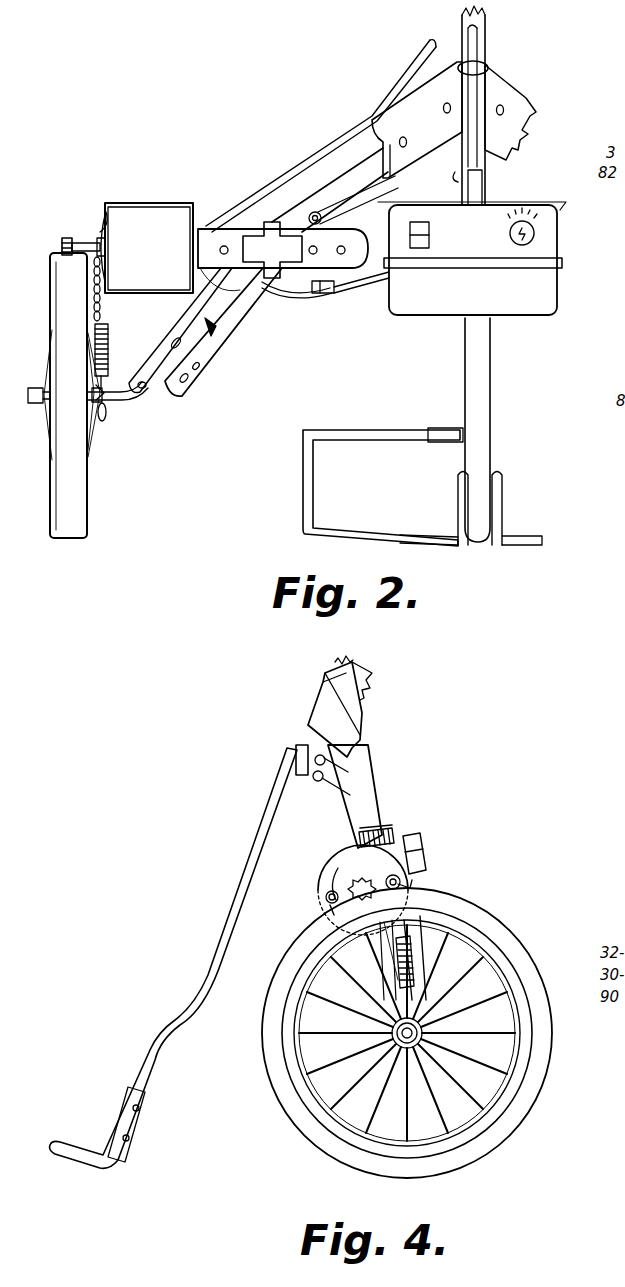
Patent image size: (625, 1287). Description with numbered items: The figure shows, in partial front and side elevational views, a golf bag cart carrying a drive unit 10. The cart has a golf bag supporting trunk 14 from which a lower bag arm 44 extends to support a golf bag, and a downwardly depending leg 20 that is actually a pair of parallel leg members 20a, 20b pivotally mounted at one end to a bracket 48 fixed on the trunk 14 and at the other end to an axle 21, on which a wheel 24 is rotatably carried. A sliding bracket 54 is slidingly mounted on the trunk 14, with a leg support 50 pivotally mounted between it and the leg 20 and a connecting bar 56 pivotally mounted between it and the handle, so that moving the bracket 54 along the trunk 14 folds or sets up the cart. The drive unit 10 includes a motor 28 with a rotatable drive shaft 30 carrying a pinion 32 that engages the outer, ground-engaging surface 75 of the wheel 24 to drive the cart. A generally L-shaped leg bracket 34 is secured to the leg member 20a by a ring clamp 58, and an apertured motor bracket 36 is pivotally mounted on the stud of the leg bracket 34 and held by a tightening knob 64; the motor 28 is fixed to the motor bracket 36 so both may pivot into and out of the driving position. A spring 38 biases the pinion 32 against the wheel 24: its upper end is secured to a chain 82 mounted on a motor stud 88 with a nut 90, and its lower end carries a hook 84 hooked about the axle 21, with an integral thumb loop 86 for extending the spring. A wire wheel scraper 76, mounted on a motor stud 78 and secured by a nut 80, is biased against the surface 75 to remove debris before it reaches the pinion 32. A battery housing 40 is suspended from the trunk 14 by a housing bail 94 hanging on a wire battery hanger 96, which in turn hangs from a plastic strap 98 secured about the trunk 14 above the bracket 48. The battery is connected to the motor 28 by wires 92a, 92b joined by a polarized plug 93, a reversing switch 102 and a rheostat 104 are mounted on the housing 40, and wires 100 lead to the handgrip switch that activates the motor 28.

In FIG. 2, the drive unit 10 is at (170, 185).
In FIG. 4, the drive unit 10 is at (300, 840).
In FIG. 2, the golf bag supporting trunk 14 is at (478, 8).
In FIG. 4, the golf bag supporting trunk 14 is at (350, 662).
In FIG. 2, the leg 20 is at (228, 352).
In FIG. 4, the leg 20 is at (380, 767).
In FIG. 2, the leg member 20a is at (166, 352).
In FIG. 4, the leg member 20a is at (396, 925).
In FIG. 2, the leg member 20b is at (236, 312).
In FIG. 4, the leg member 20b is at (426, 965).
In FIG. 2, the axle 21 is at (148, 394).
In FIG. 2, the wheel 24 is at (92, 488).
In FIG. 4, the wheel 24 is at (468, 1172).
In FIG. 2, the motor 28 is at (147, 248).
In FIG. 4, the motor 28 is at (318, 886).
In FIG. 2, the drive shaft 30 is at (80, 240).
In FIG. 2, the pinion 32 is at (65, 235).
In FIG. 4, the pinion 32 is at (360, 877).
In FIG. 2, the leg bracket 34 is at (310, 212).
In FIG. 4, the leg bracket 34 is at (382, 824).
In FIG. 2, the motor bracket 36 is at (205, 235).
In FIG. 2, the spring 38 is at (110, 345).
In FIG. 4, the spring 38 is at (412, 945).
In FIG. 2, the battery housing 40 is at (522, 310).
In FIG. 2, the lower bag arm 44 is at (314, 488).
In FIG. 4, the lower bag arm 44 is at (72, 1152).
In FIG. 2, the bracket 48 is at (412, 92).
In FIG. 4, the bracket 48 is at (322, 705).
In FIG. 2, the leg support 50 is at (376, 210).
In FIG. 4, the sliding bracket 54 is at (300, 768).
In FIG. 2, the connecting bar 56 is at (480, 50).
In FIG. 4, the ring clamp 58 is at (392, 836).
In FIG. 2, the tightening knob 64 is at (272, 221).
In FIG. 4, the tightening knob 64 is at (422, 850).
In FIG. 2, the outer surface 75 is at (70, 518).
In FIG. 4, the outer surface 75 is at (526, 1128).
In FIG. 4, the wheel scraper 76 is at (325, 906).
In FIG. 4, the motor stud 78 is at (326, 898).
In FIG. 4, the nut 80 is at (334, 872).
In FIG. 2, the chain 82 is at (104, 302).
In FIG. 4, the chain 82 is at (386, 936).
In FIG. 2, the hook 84 is at (104, 395).
In FIG. 2, the thumb loop 86 is at (105, 420).
In FIG. 4, the motor stud 88 is at (412, 887).
In FIG. 2, the nut 90 is at (105, 237).
In FIG. 4, the nut 90 is at (402, 878).
In FIG. 2, the wire 92a is at (365, 287).
In FIG. 2, the wire 92b is at (290, 296).
In FIG. 2, the polarized plug 93 is at (323, 296).
In FIG. 2, the housing bail 94 is at (484, 186).
In FIG. 2, the battery hanger 96 is at (506, 110).
In FIG. 2, the plastic strap 98 is at (488, 73).
In FIG. 4, the plastic strap 98 is at (254, 673).
In FIG. 2, the wires 100 is at (420, 50).
In FIG. 2, the reversing switch 102 is at (412, 248).
In FIG. 2, the rheostat 104 is at (534, 236).